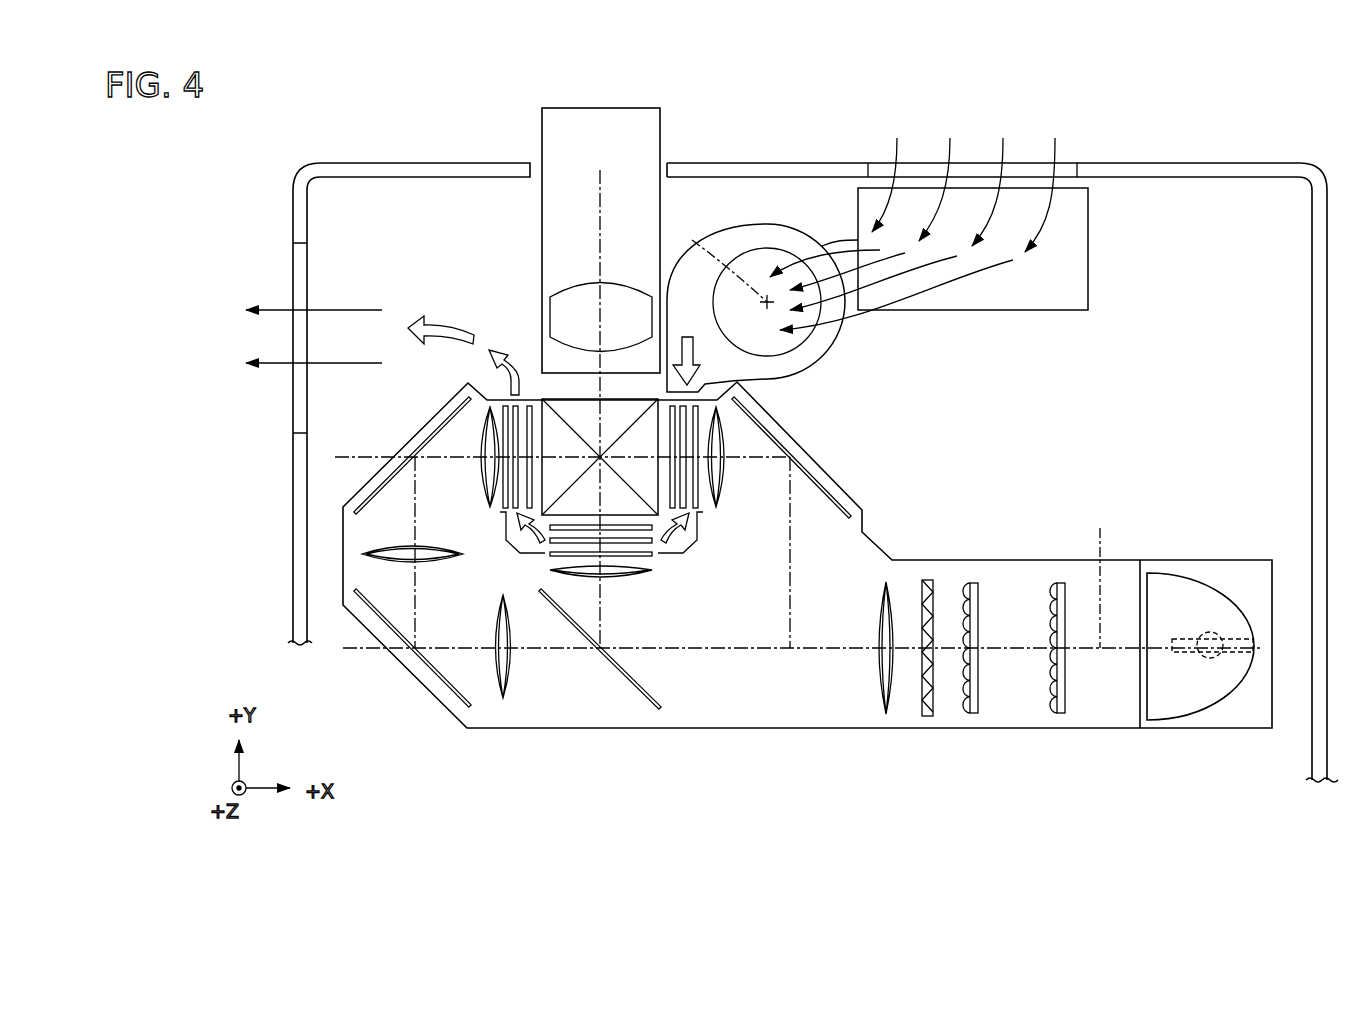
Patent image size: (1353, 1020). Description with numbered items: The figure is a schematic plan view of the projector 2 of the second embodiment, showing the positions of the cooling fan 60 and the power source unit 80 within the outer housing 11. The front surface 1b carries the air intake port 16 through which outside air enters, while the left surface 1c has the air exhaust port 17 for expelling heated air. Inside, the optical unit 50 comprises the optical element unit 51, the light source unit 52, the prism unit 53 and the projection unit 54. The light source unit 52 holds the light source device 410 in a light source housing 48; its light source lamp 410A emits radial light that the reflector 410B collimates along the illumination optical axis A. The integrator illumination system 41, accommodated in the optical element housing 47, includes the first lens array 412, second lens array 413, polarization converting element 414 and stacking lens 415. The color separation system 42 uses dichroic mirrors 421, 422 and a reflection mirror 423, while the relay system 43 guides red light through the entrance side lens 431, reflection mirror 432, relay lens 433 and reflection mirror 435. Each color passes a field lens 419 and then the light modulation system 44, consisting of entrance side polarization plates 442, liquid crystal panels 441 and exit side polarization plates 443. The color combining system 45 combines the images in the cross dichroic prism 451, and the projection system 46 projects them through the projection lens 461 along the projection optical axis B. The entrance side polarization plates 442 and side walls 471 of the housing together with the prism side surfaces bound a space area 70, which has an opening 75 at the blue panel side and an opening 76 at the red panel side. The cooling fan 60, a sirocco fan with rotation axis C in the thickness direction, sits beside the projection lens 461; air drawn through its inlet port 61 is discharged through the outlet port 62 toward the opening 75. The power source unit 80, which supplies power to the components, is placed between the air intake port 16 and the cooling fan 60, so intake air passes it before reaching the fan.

The projector 2 is at (1104, 120).
The outer housing 11 is at (410, 163).
The front surface 1b is at (775, 163).
The air intake port 16 is at (1025, 163).
The air exhaust port 17 is at (293, 258).
The left surface 1c is at (293, 550).
The projection unit 54 is at (670, 129).
The projection lens 461 is at (645, 283).
The projection optical axis B is at (600, 215).
The projection system 46 is at (840, 286).
The cooling fan 60 is at (752, 235).
The inlet port 61 is at (790, 250).
The outlet port 62 is at (700, 390).
The rotation axis C is at (719, 264).
The power source unit 80 is at (1088, 247).
The optical unit 50 is at (1060, 423).
The opening 75 is at (668, 400).
The opening 76 is at (516, 392).
The color combining system 45 is at (611, 520).
The cross dichroic prism 451 is at (585, 505).
The relay system 43 is at (389, 706).
The reflection mirror 435 is at (382, 491).
The relay lens 433 is at (405, 566).
The reflection mirror 432 is at (432, 671).
The entrance side lens 431 is at (495, 682).
The field lens 419 is at (482, 495).
The entrance side polarization plate 442 is at (503, 482).
The liquid crystal panel 441 is at (515, 452).
The exit side polarization plate 443 is at (530, 420).
The light modulation system 44 is at (493, 549).
The space area 70 is at (699, 523).
The side wall 471 is at (674, 553).
The prism unit 53 is at (665, 557).
The color separation system 42 is at (762, 781).
The dichroic mirror 422 is at (632, 690).
The reflection mirror 423 is at (830, 500).
The dichroic mirror 421 is at (820, 690).
The integrator illumination system 41 is at (1010, 780).
The optical element housing 47 is at (952, 560).
The optical element unit 51 is at (1008, 530).
The stacking lens 415 is at (884, 714).
The polarization converting element 414 is at (928, 716).
The second lens array 413 is at (973, 713).
The first lens array 412 is at (1062, 713).
The illumination optical axis A is at (1099, 577).
The light source housing 48 is at (1210, 562).
The light source unit 52 is at (1262, 535).
The light source device 410 is at (1192, 709).
The reflector 410B is at (1160, 720).
The light source lamp 410A is at (1212, 658).